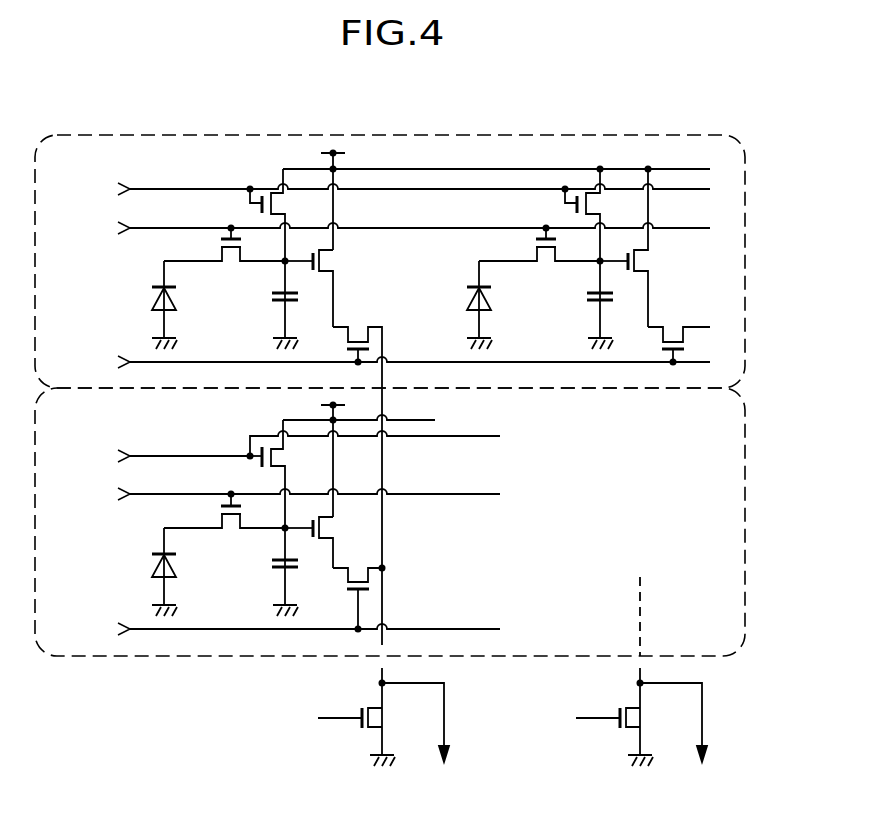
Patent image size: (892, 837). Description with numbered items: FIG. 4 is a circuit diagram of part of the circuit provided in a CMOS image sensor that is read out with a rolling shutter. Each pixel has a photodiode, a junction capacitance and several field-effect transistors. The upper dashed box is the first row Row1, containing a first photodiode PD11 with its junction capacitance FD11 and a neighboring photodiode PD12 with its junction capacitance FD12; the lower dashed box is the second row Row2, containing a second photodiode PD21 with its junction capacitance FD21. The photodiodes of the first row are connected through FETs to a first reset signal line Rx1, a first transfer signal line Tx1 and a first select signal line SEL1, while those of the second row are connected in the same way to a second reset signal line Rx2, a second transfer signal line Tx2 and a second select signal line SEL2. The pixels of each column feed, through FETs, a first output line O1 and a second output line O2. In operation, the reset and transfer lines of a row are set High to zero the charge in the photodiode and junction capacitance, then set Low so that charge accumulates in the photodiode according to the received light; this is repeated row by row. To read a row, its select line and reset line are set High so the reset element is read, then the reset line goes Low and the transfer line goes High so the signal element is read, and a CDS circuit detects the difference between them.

The first photodiode PD11 is at (151, 301).
The junction capacitance FD11 is at (272, 301).
The photodiode PD12 is at (468, 301).
The junction capacitance FD12 is at (586, 301).
The second photodiode PD21 is at (151, 568).
The junction capacitance FD21 is at (272, 568).
The first row Row1 is at (745, 247).
The second row Row2 is at (745, 512).
The first reset signal line Rx1 is at (391, 189).
The first transfer signal line Tx1 is at (391, 228).
The first select signal line SEL1 is at (385, 362).
The second reset signal line Rx2 is at (286, 450).
The second transfer signal line Tx2 is at (286, 494).
The second select signal line SEL2 is at (280, 629).
The first output line O1 is at (388, 730).
The second output line O2 is at (646, 684).